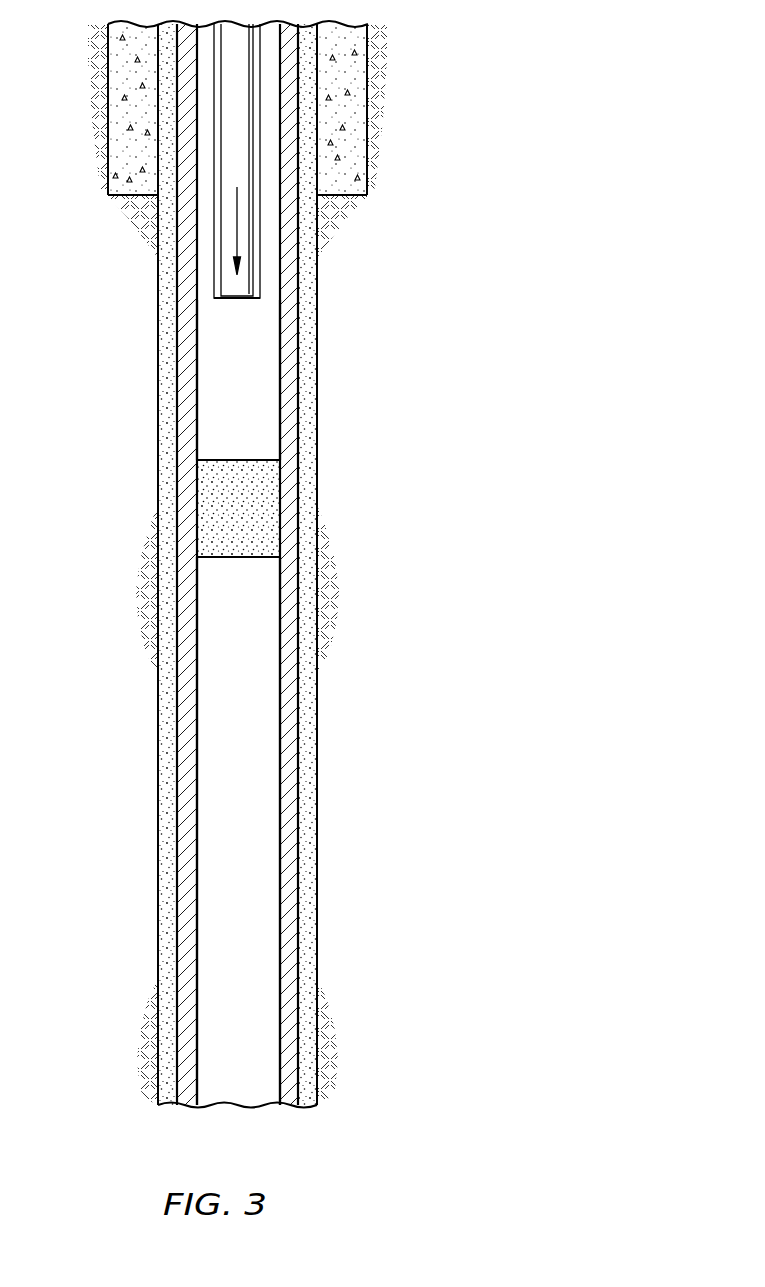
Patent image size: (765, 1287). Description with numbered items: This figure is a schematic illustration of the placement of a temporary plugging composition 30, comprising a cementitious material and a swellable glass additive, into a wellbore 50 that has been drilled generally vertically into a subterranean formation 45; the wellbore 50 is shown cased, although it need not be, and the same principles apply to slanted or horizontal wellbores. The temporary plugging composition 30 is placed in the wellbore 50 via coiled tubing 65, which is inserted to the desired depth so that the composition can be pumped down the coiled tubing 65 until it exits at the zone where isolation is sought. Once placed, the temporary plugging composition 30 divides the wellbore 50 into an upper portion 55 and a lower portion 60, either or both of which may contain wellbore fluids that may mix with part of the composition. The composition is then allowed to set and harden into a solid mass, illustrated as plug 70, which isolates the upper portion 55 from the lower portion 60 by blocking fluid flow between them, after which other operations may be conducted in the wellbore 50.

The temporary plugging composition 30 is at (238, 231).
The subterranean formation 45 is at (332, 598).
The wellbore 50 is at (284, 407).
The upper portion 55 is at (213, 410).
The lower portion 60 is at (228, 712).
The coiled tubing 65 is at (217, 258).
The plug 70 is at (258, 498).